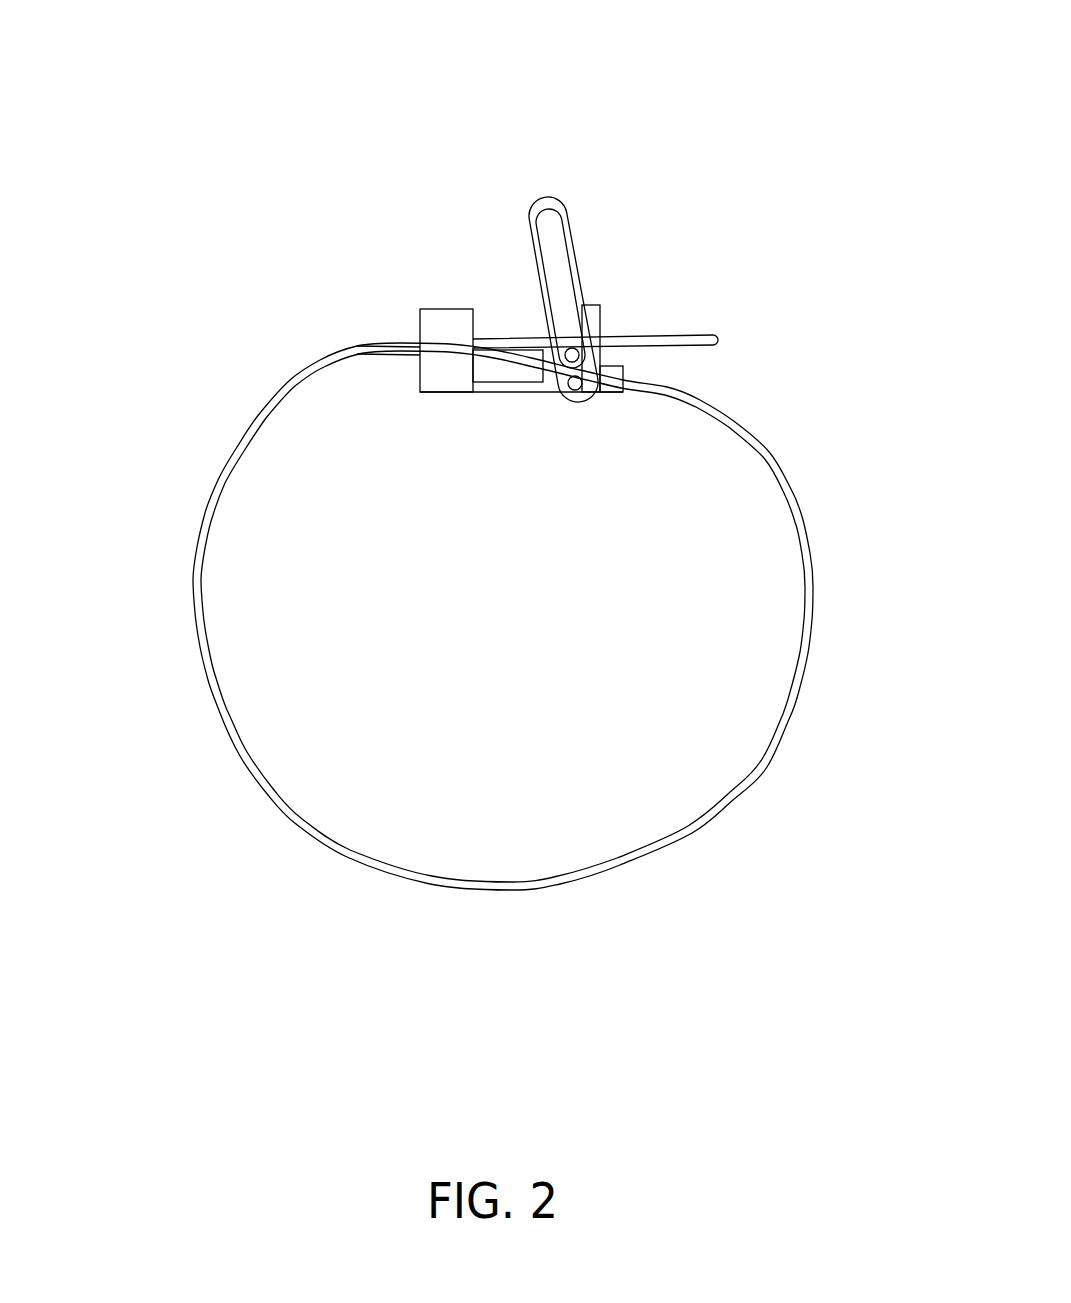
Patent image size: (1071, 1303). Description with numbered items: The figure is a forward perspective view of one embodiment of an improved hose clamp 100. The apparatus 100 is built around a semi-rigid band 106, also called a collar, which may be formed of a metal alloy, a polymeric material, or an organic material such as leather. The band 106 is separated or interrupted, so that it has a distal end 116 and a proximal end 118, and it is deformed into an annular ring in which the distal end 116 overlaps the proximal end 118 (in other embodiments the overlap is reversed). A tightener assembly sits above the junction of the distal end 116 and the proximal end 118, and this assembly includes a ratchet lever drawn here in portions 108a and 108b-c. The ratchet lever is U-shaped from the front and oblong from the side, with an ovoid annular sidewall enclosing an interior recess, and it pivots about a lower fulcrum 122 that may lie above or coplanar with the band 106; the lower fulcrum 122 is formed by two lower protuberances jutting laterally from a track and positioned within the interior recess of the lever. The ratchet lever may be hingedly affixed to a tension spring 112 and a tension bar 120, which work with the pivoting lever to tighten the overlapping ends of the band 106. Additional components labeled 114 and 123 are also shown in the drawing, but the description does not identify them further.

The hose clamp 100 is at (119, 128).
The semi-rigid band 106 is at (808, 564).
The tension spring 112 is at (195, 558).
The housing 114 is at (427, 392).
The distal end 116 is at (673, 343).
The proximal end 118 is at (527, 380).
The tension bar 120 is at (527, 382).
The lower fulcrum 122 is at (575, 378).
The upper pivot pin 123 is at (570, 353).
The ratchet lever 108a is at (565, 212).
The ratchet lever 108b-c is at (650, 427).